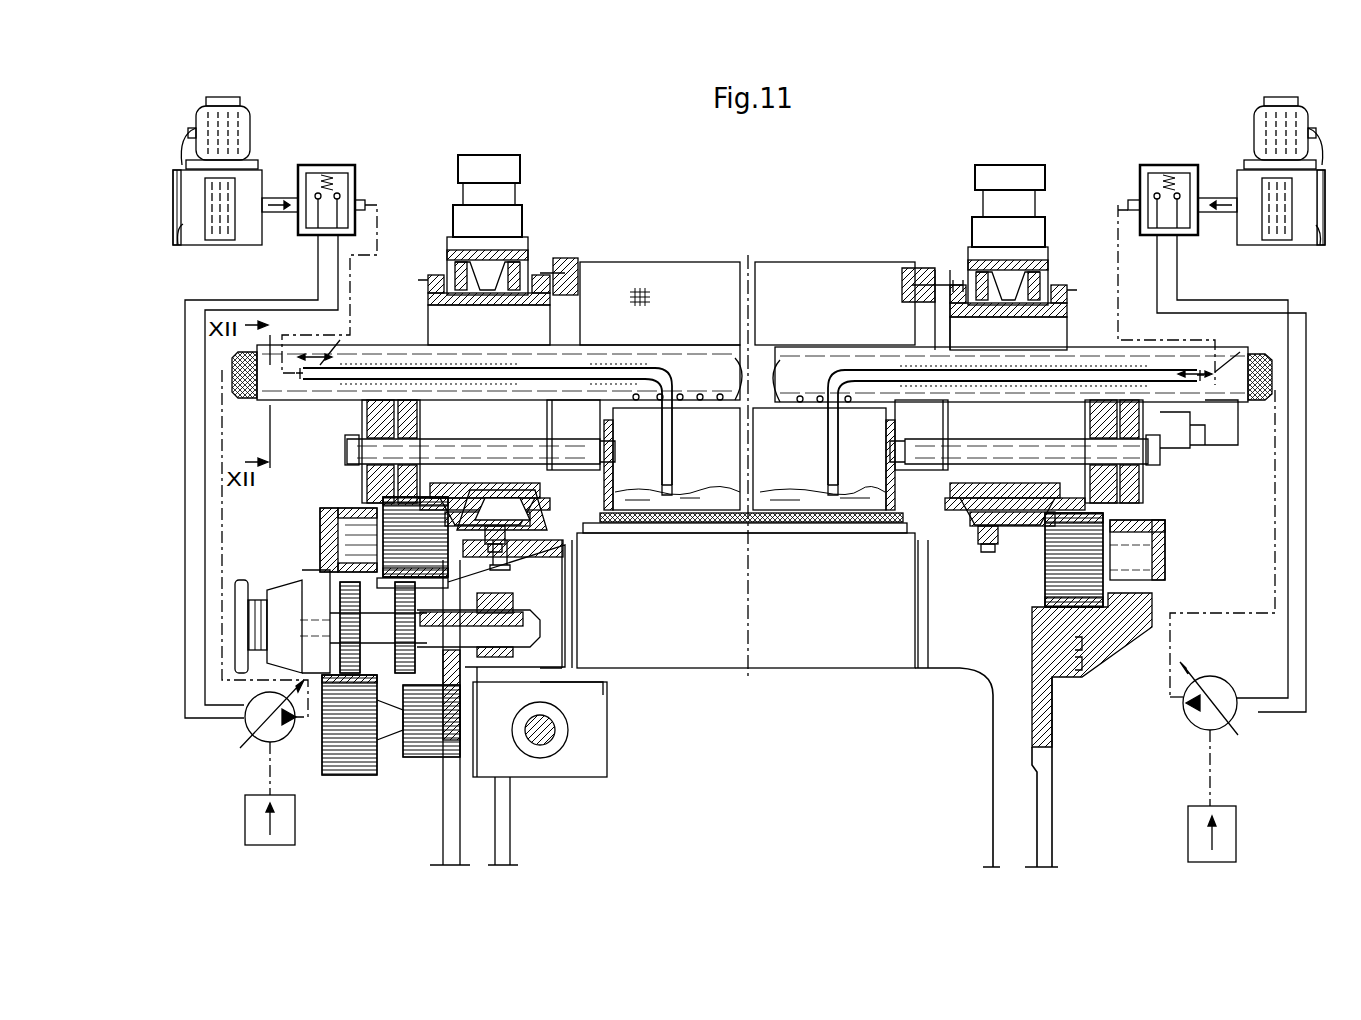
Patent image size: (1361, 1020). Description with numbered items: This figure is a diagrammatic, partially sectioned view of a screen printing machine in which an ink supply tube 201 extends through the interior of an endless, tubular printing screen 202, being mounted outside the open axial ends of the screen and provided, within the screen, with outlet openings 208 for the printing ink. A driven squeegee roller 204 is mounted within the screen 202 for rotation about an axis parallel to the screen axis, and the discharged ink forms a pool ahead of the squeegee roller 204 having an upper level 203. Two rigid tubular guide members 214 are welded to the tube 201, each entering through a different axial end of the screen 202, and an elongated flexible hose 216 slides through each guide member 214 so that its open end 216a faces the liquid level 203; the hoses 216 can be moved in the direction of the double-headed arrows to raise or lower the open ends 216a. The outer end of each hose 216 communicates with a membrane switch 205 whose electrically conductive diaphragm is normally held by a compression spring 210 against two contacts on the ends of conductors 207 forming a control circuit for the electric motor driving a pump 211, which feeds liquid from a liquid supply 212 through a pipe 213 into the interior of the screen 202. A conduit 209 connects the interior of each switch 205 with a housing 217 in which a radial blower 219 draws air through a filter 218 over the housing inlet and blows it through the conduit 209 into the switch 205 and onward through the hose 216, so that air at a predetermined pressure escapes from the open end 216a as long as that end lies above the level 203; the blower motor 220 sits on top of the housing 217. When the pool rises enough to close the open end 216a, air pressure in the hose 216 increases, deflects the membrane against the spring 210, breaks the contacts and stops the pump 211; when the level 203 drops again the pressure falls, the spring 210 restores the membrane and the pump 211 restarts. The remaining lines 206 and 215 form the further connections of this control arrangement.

The ink supply tube 201 is at (810, 370).
The endless tubular printing screen 202 is at (800, 275).
The upper level of ink pool 203 is at (698, 490).
The squeegee roller 204 is at (760, 490).
The membrane switch 205 is at (335, 170).
The pressure line 206 is at (340, 280).
The conductor 207 is at (318, 280).
The outlet openings 208 is at (708, 390).
The conduit 209 is at (1215, 198).
The compression spring 210 is at (1172, 172).
The pump 211 is at (1222, 680).
The liquid supply 212 is at (1236, 834).
The pipe 213 is at (1275, 548).
The tubular guide member 214 is at (600, 370).
The control line 215 is at (378, 215).
The flexible hose 216 is at (318, 378).
The open end of hose 216a is at (668, 495).
The housing 217 is at (210, 245).
The filter 218 is at (180, 244).
The radial blower 219 is at (228, 186).
The motor 220 is at (232, 130).